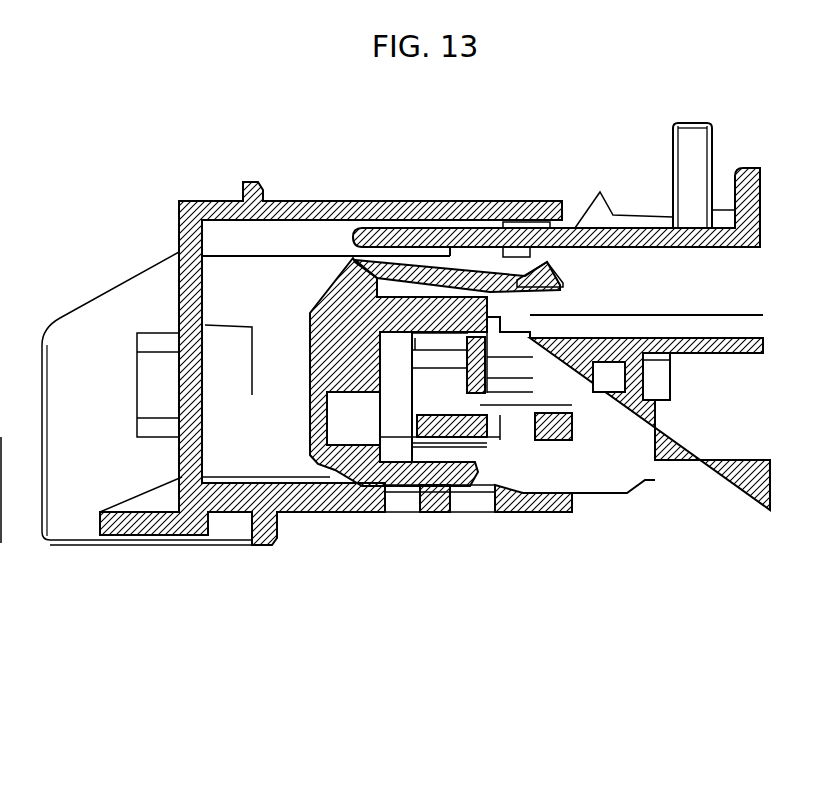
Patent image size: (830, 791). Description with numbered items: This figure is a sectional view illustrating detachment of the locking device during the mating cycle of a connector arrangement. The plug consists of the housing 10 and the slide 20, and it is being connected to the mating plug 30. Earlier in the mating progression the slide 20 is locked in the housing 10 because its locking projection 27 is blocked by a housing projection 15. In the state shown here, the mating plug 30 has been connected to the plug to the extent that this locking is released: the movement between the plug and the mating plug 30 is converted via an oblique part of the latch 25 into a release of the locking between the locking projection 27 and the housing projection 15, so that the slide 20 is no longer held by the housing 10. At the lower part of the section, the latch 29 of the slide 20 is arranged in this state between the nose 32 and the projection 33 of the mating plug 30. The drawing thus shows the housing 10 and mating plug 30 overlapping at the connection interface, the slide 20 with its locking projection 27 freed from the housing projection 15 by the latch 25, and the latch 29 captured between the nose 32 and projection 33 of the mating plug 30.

The housing 10 is at (612, 420).
The housing projection 15 is at (547, 262).
The slide 20 is at (358, 455).
The latch 25 is at (552, 270).
The locking projection 27 is at (520, 277).
The latch 29 is at (455, 492).
The mating plug 30 is at (200, 502).
The nose 32 is at (500, 493).
The projection 33 is at (433, 497).